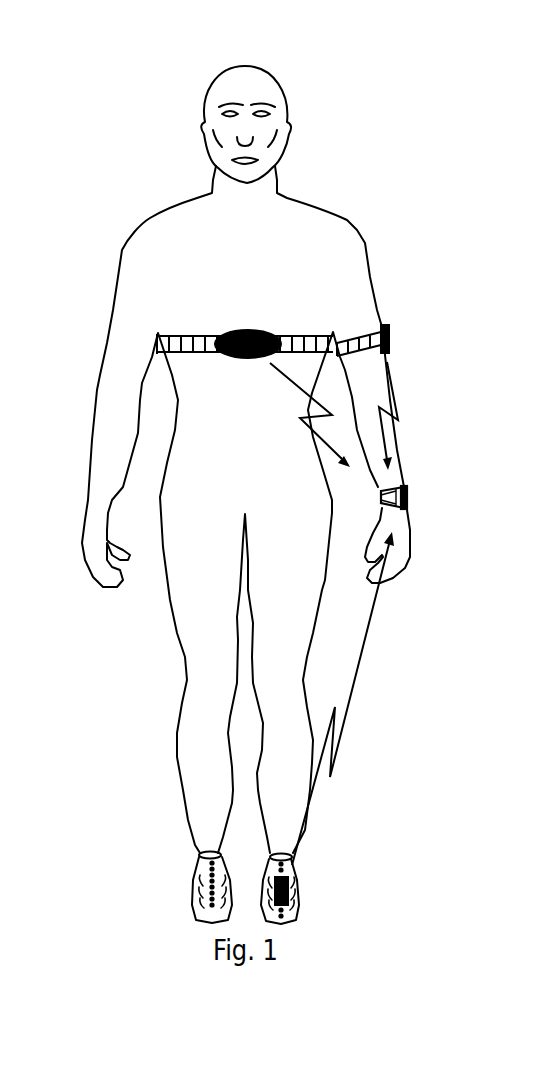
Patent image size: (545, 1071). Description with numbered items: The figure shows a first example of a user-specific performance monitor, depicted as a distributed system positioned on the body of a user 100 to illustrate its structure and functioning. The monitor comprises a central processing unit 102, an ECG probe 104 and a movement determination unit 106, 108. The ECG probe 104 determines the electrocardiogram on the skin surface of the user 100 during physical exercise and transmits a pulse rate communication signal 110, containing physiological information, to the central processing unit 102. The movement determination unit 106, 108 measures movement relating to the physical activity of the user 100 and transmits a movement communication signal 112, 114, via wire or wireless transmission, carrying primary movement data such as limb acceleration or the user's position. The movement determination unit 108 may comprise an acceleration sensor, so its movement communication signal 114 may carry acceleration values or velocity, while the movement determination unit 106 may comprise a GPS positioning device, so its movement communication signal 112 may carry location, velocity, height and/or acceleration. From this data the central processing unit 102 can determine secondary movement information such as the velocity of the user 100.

The user 100 is at (356, 159).
The central processing unit 102 is at (409, 498).
The ECG probe 104 is at (248, 334).
The movement determination unit 106 is at (390, 340).
The movement determination unit 108 is at (290, 892).
The pulse rate communication signal 110 is at (299, 420).
The movement communication signal 112 is at (396, 412).
The movement communication signal 114 is at (357, 678).